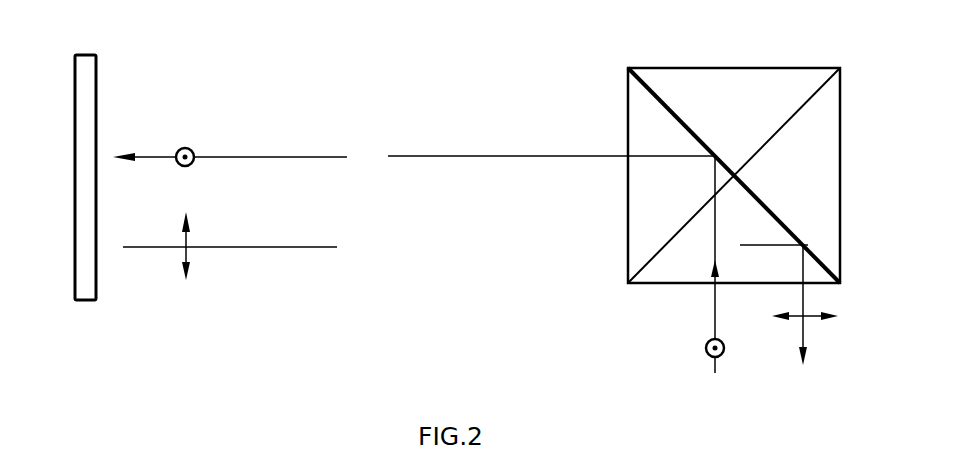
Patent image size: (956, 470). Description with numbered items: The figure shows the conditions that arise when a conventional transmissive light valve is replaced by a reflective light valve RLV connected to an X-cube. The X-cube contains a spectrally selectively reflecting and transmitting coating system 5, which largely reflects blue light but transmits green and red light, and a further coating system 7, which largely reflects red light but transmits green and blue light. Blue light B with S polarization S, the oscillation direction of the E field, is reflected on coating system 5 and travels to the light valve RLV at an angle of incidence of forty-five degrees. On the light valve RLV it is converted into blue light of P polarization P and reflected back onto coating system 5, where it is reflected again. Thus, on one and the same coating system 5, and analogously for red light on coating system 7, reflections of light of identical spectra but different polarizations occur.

The spectrally selectively reflecting and transmitting coating system 5 is at (820, 257).
The further spectrally selectively reflecting and transmitting coating system 7 is at (807, 102).
The reflective light valve RLV is at (53, 177).
The blue light B is at (556, 251).
The S-polarization S is at (475, 226).
The P-polarization P is at (489, 288).